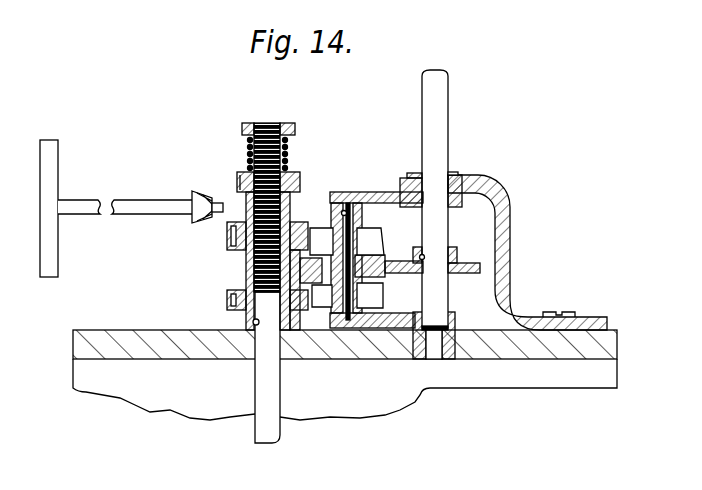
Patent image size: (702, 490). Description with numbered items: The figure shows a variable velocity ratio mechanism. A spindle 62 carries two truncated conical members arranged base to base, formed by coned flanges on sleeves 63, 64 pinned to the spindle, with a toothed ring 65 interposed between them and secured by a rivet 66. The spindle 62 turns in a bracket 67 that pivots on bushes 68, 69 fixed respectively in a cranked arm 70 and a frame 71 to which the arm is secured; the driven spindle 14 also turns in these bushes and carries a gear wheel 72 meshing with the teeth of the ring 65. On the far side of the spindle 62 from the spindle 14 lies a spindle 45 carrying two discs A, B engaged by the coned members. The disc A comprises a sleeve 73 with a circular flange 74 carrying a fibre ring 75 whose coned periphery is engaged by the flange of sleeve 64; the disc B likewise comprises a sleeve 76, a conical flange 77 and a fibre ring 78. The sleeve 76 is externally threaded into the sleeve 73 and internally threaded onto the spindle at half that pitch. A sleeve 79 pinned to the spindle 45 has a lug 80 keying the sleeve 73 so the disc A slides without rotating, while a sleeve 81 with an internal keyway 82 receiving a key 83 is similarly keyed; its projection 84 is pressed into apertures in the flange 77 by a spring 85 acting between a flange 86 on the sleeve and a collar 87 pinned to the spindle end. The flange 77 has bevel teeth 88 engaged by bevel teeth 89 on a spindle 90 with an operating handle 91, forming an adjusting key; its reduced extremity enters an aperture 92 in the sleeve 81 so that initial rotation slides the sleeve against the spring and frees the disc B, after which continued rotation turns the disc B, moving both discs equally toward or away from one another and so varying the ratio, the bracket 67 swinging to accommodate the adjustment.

The spindle 14 is at (440, 222).
The spindle 45 is at (268, 396).
The spindle 62 is at (338, 345).
The sleeve 63 is at (367, 202).
The sleeve 64 is at (372, 290).
The ring 65 is at (392, 263).
The rivet 66 is at (316, 308).
The bracket 67 is at (333, 192).
The bush 68 is at (458, 176).
The bush 69 is at (445, 345).
The cranked arm 70 is at (506, 255).
The frame 71 is at (542, 347).
The gear wheel 72 is at (462, 272).
The sleeve 73 is at (246, 270).
The circular flange 74 is at (228, 304).
The ring 75 is at (228, 290).
The sleeve 76 is at (294, 224).
The conical flange 77 is at (312, 230).
The ring 78 is at (232, 247).
The sleeve 79 is at (253, 324).
The projecting lug 80 is at (290, 330).
The sleeve 81 is at (243, 188).
The internal keyway 82 is at (293, 173).
The key 83 is at (294, 208).
The projection 84 is at (228, 226).
The spring 85 is at (291, 138).
The flange 86 is at (236, 172).
The collar 87 is at (254, 126).
The bevel teeth 88 is at (232, 222).
The bevel teeth 89 is at (213, 207).
The spindle 90 is at (126, 209).
The operating handle 91 is at (52, 166).
The aperture 92 is at (245, 178).
The disc A is at (190, 293).
The disc B is at (192, 245).